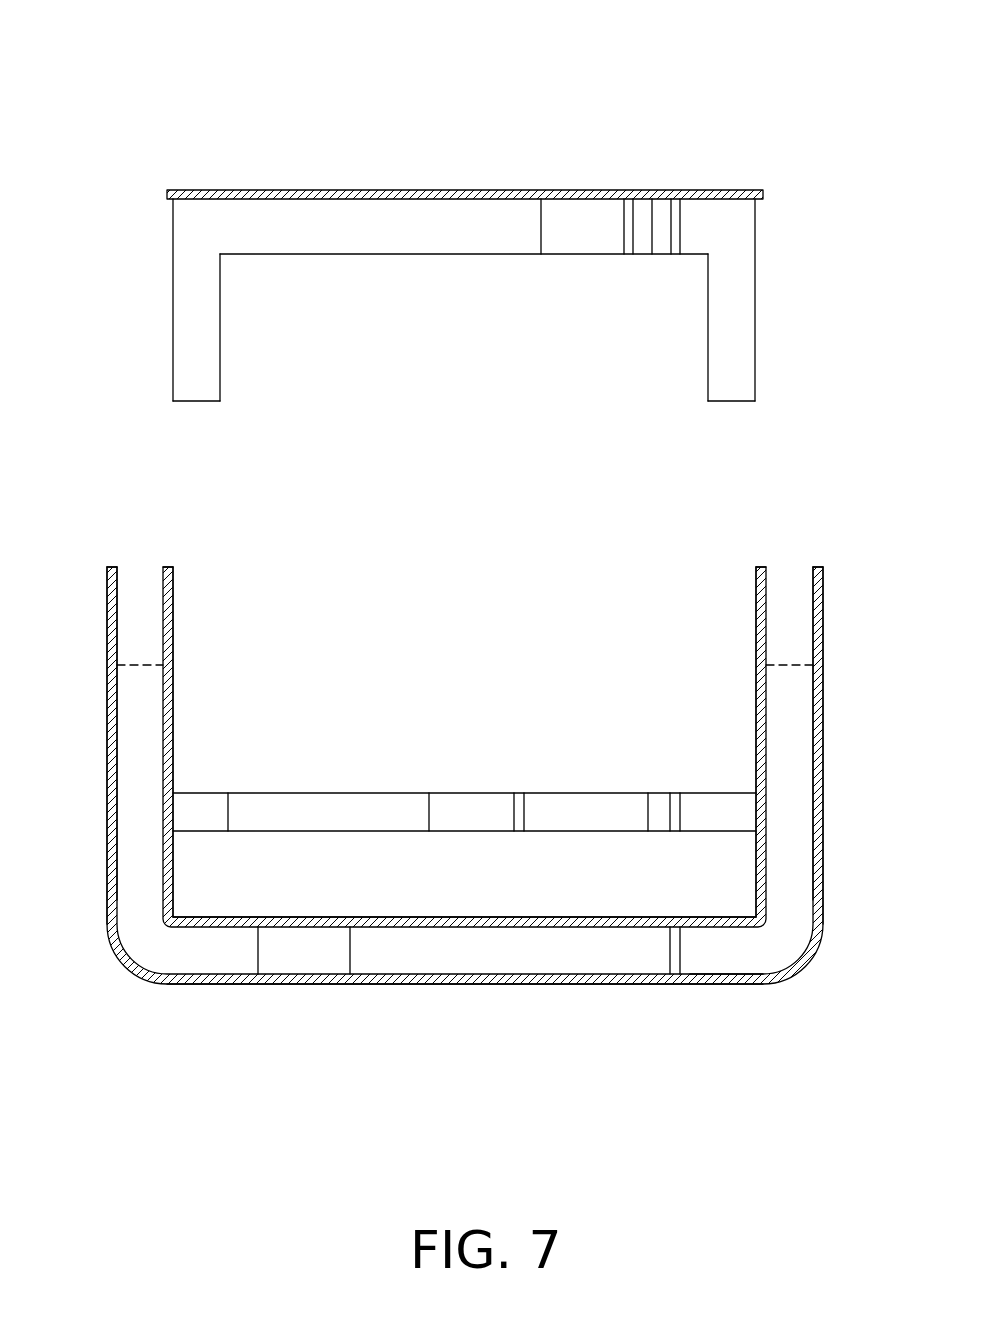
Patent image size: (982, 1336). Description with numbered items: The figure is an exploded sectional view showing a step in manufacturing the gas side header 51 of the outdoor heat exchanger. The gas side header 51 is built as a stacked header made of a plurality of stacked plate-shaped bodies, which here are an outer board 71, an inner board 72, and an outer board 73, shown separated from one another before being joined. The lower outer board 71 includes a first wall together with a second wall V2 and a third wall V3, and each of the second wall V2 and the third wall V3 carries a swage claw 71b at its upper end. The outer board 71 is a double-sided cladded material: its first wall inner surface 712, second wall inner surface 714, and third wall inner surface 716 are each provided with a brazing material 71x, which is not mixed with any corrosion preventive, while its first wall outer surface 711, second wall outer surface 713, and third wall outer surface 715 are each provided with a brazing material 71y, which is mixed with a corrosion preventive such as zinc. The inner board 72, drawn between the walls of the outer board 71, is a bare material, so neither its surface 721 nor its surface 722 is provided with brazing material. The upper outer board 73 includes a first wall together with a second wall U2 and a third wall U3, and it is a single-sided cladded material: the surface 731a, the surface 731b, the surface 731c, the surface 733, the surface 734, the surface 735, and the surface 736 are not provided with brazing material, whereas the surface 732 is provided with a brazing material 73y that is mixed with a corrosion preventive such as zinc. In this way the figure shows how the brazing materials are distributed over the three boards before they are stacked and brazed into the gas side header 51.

The gas side header 51 is at (100, 69).
The outer board 73 is at (493, 220).
The surface 732 is at (296, 198).
The brazing material 73y is at (695, 196).
The second wall U2 is at (196, 295).
The third wall U3 is at (733, 293).
The surface 733 is at (174, 358).
The surface 735 is at (755, 357).
The surface 734 is at (222, 380).
The surface 736 is at (708, 382).
The surface 731a is at (203, 403).
The surface 731b is at (720, 404).
The surface 731c is at (462, 255).
The outer board 71 is at (497, 950).
The swage claw 71b is at (141, 601).
The second wall V2 is at (138, 723).
The third wall V3 is at (790, 740).
The inner board 72 is at (270, 808).
The surface 722 is at (430, 793).
The surface 721 is at (430, 831).
The second wall inner surface 714 is at (172, 858).
The third wall inner surface 716 is at (757, 857).
The first wall inner surface 712 is at (230, 920).
The first wall outer surface 711 is at (224, 978).
The second wall outer surface 713 is at (114, 863).
The third wall outer surface 715 is at (821, 867).
The brazing material 71x is at (693, 978).
The brazing material 71y is at (724, 983).